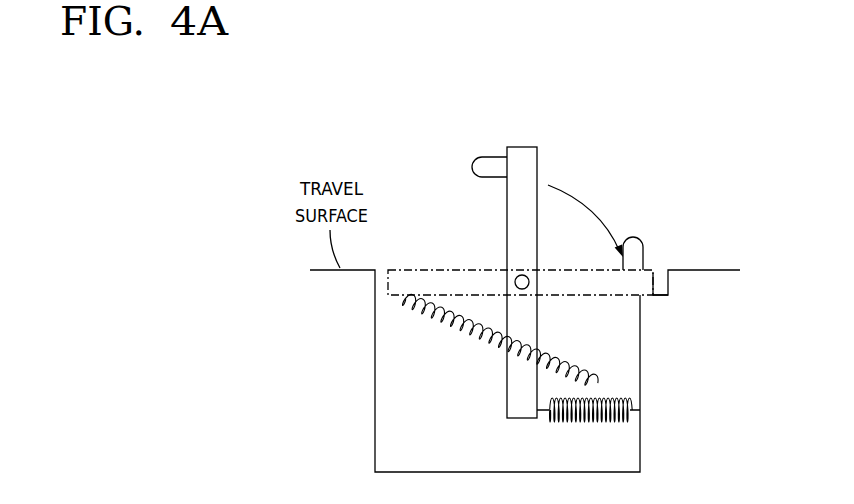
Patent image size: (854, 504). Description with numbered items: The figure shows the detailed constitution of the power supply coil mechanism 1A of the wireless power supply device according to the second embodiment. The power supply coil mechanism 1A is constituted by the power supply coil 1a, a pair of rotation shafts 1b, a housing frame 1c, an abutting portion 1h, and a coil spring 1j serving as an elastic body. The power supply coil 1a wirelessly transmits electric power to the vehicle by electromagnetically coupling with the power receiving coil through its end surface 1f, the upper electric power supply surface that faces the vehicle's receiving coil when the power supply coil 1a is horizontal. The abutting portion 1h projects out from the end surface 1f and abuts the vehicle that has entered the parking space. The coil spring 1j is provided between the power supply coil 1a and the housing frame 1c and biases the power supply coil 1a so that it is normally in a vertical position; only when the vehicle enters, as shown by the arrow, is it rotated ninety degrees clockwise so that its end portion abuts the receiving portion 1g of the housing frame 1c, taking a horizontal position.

The power supply coil mechanism 1A is at (672, 115).
The power supply coil 1a is at (530, 259).
The rotation shaft 1b is at (516, 278).
The housing frame 1c is at (641, 364).
The end surface 1f is at (437, 268).
The receiving portion 1g is at (662, 293).
The abutting portion 1h is at (478, 160).
The coil spring 1j is at (549, 418).